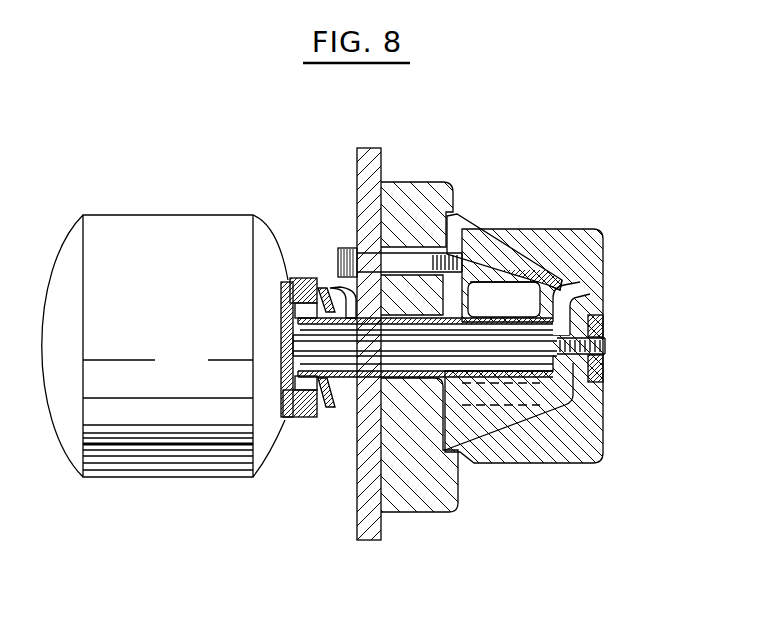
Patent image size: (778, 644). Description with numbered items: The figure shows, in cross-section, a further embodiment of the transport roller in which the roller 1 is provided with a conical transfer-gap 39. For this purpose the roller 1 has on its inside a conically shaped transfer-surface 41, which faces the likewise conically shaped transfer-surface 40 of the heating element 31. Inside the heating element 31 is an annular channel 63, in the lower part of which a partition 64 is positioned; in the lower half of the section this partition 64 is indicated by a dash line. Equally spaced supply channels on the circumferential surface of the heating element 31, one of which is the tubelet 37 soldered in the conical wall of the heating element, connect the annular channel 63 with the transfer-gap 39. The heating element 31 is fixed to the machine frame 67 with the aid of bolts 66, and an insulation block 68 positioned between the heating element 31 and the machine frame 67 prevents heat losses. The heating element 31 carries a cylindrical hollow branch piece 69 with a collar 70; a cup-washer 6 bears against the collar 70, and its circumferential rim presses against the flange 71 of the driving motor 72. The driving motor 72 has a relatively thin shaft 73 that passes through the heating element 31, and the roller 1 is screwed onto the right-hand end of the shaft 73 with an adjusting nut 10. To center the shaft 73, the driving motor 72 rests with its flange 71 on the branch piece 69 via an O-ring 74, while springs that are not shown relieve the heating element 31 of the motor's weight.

The roller 1 is at (583, 243).
The cup-washer 6 is at (319, 288).
The adjusting nut 10 is at (606, 357).
The heating element 31 is at (465, 268).
The tubelet 37 is at (500, 283).
The conical transfer-gap 39 is at (548, 278).
The transfer-surface of heating element 40 is at (572, 300).
The transfer-surface of roller 41 is at (603, 257).
The annular channel 63 is at (478, 290).
The partition 64 is at (491, 415).
The bolts 66 is at (399, 262).
The machine frame 67 is at (365, 188).
The insulation block 68 is at (413, 500).
The cylindrical hollow branch piece 69 is at (335, 288).
The collar 70 is at (340, 388).
The flange 71 is at (292, 278).
The driving motor 72 is at (110, 222).
The shaft 73 is at (305, 278).
The O-ring 74 is at (303, 418).